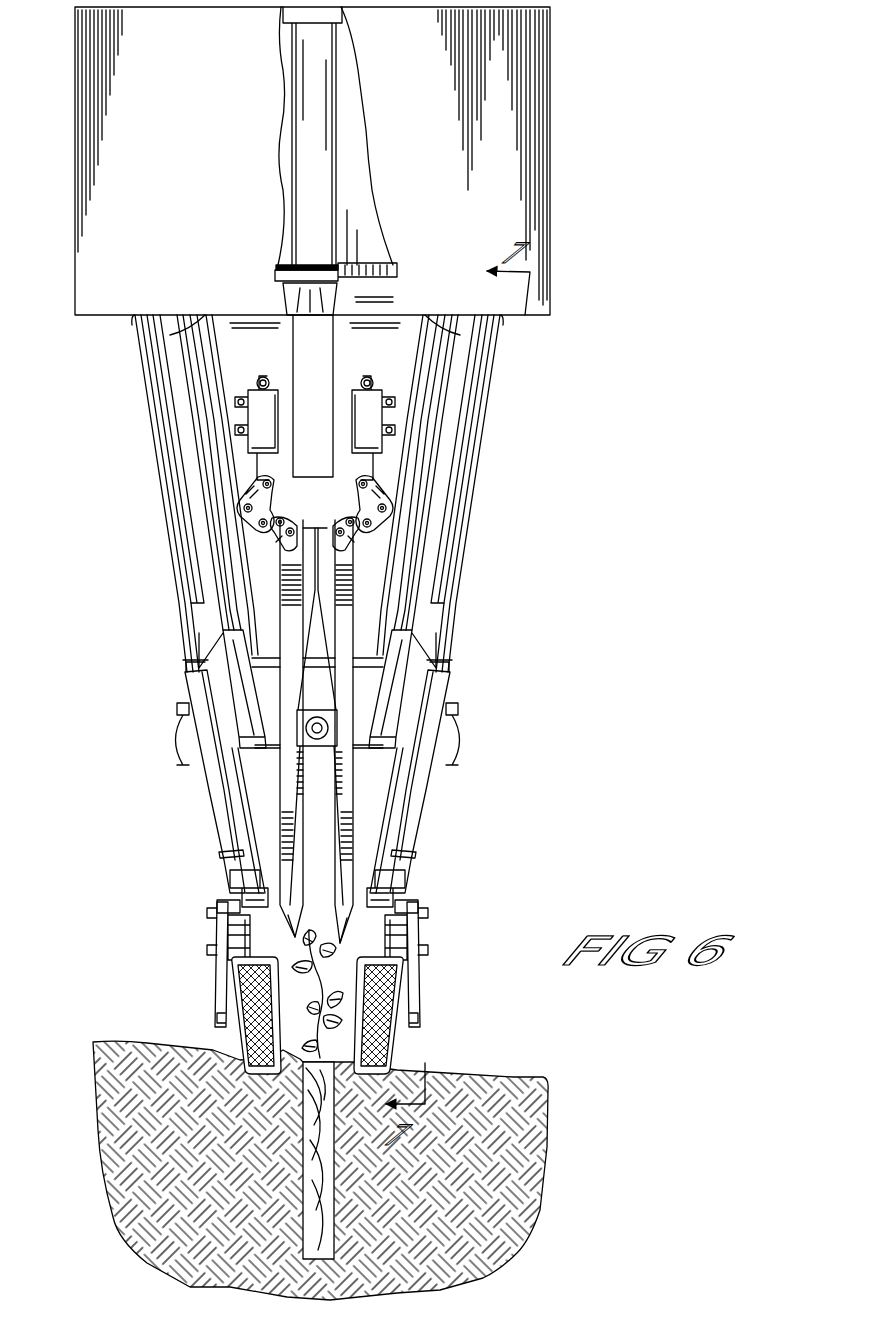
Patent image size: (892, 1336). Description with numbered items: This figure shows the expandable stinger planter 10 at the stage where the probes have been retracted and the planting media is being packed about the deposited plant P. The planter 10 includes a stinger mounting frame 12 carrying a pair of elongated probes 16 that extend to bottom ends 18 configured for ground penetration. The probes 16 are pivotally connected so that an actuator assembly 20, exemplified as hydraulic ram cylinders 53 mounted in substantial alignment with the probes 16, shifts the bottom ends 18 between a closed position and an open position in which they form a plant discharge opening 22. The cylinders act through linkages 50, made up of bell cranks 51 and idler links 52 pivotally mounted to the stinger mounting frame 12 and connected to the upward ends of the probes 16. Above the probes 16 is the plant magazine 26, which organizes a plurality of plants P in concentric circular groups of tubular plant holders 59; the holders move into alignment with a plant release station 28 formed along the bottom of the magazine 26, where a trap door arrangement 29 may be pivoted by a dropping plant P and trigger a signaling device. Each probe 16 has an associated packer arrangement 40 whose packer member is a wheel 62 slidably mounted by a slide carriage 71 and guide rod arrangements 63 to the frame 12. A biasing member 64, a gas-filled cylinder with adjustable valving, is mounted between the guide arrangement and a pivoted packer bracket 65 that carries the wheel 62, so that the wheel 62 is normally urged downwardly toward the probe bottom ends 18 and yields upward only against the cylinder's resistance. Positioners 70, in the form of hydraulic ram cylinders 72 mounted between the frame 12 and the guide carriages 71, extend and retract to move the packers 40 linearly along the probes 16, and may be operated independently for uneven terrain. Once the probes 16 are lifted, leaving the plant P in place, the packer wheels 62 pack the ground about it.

The expandable stinger planter 10 is at (592, 338).
The stinger mounting frame 12 is at (400, 378).
The elongated probes 16 is at (360, 790).
The bottom ends 18 is at (255, 910).
The actuator assembly 20 is at (284, 372).
The plant discharge opening 22 is at (322, 918).
The plant magazine 26 is at (556, 157).
The plant release station 28 is at (317, 272).
The trap door arrangement 29 is at (296, 294).
The packer arrangement 40 is at (404, 1050).
The linkages 50 is at (390, 485).
The bell cranks 51 is at (387, 495).
The idler links 52 is at (275, 535).
The hydraulic ram cylinders 53 is at (263, 420).
The plant holders 59 is at (345, 125).
The packer wheel 62 is at (253, 995).
The guide rod arrangements 63 is at (220, 560).
The biasing member 64 is at (212, 801).
The packer brackets 65 is at (415, 933).
The positioners 70 is at (172, 528).
The slide carriage 71 is at (222, 657).
The hydraulic ram cylinders 72 is at (168, 466).
The plant P is at (330, 960).